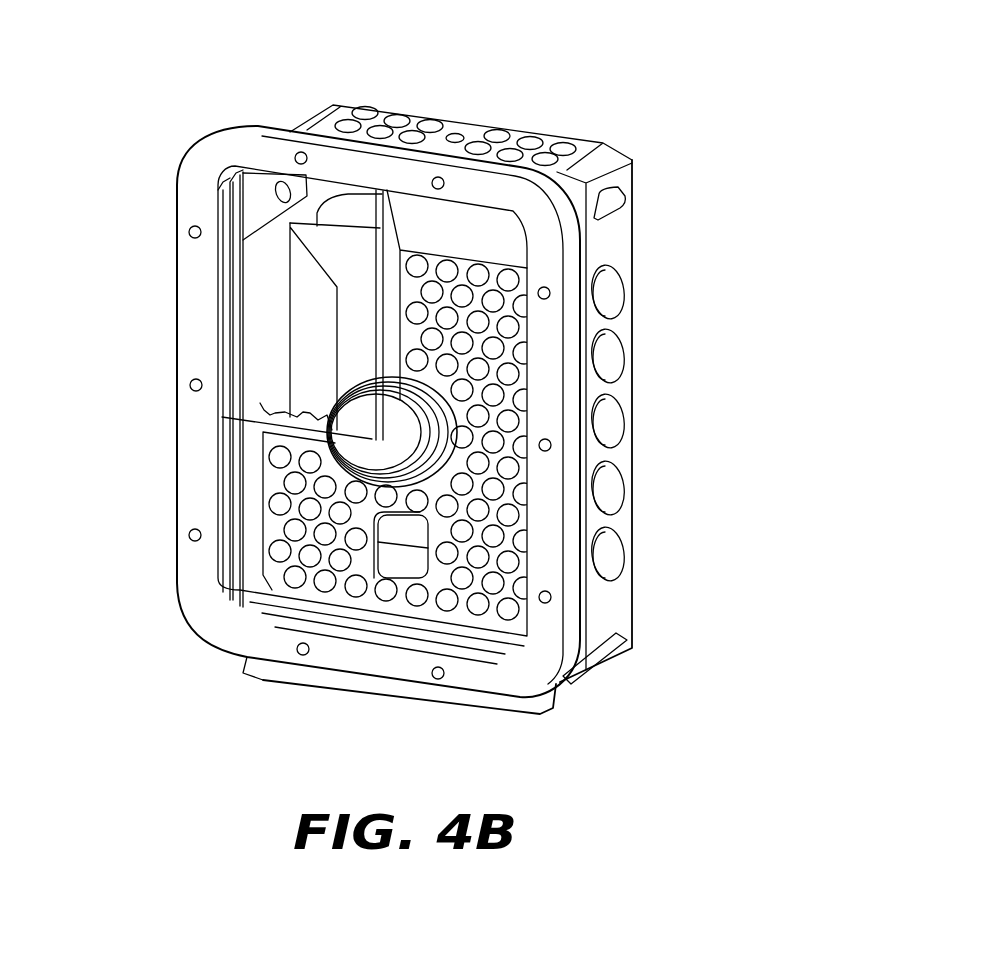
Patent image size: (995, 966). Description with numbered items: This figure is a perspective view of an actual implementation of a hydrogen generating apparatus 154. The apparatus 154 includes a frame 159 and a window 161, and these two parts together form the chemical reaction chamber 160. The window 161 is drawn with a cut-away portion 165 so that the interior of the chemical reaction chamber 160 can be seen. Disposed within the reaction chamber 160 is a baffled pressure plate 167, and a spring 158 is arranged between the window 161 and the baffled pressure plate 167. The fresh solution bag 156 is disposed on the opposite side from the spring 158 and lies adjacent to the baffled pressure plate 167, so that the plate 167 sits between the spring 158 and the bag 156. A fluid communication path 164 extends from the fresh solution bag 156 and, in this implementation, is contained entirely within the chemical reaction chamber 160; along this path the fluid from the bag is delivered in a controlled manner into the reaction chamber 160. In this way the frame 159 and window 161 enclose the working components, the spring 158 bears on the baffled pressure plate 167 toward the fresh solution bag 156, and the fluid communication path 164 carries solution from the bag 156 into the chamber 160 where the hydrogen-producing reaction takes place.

The hydrogen generating apparatus 154 is at (612, 76).
The fresh solution bag 156 is at (334, 358).
The spring 158 is at (455, 447).
The frame 159 is at (630, 212).
The chemical reaction chamber 160 is at (252, 470).
The window 161 is at (567, 628).
The fluid communication path 164 is at (342, 198).
The cut-away portion 165 is at (265, 354).
The baffled pressure plate 167 is at (268, 521).